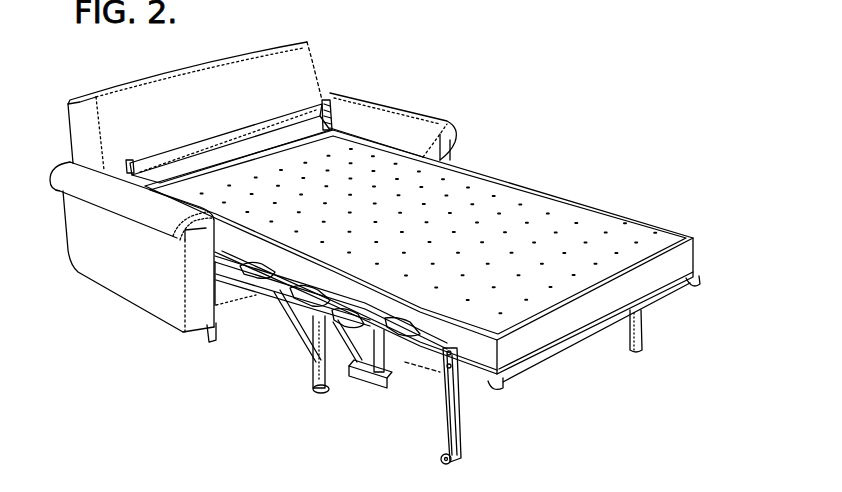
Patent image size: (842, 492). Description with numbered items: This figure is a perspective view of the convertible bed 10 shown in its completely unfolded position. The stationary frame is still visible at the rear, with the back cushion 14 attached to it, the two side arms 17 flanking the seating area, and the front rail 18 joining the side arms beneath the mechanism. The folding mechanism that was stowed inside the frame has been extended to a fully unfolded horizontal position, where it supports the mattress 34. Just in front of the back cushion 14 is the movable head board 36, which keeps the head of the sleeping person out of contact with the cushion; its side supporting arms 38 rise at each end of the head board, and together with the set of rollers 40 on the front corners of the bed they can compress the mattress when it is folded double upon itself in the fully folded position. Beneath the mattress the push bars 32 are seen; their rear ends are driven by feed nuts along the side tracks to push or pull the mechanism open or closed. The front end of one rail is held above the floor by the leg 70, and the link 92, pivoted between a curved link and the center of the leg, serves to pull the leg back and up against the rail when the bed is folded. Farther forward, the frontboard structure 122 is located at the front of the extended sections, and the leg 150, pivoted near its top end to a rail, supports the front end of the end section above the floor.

The convertible bed 10 is at (573, 1).
The back cushion 14 is at (147, 90).
The side arm 17 is at (135, 268).
The front rail 18 is at (234, 313).
The push bar 32 is at (266, 294).
The mattress 34 is at (475, 247).
The movable head board 36 is at (226, 142).
The side supporting arm 38 is at (330, 108).
The roller 40 is at (690, 286).
The leg 70 is at (312, 374).
The link 92 is at (295, 334).
The frontboard structure 122 is at (370, 390).
The leg 150 is at (457, 445).